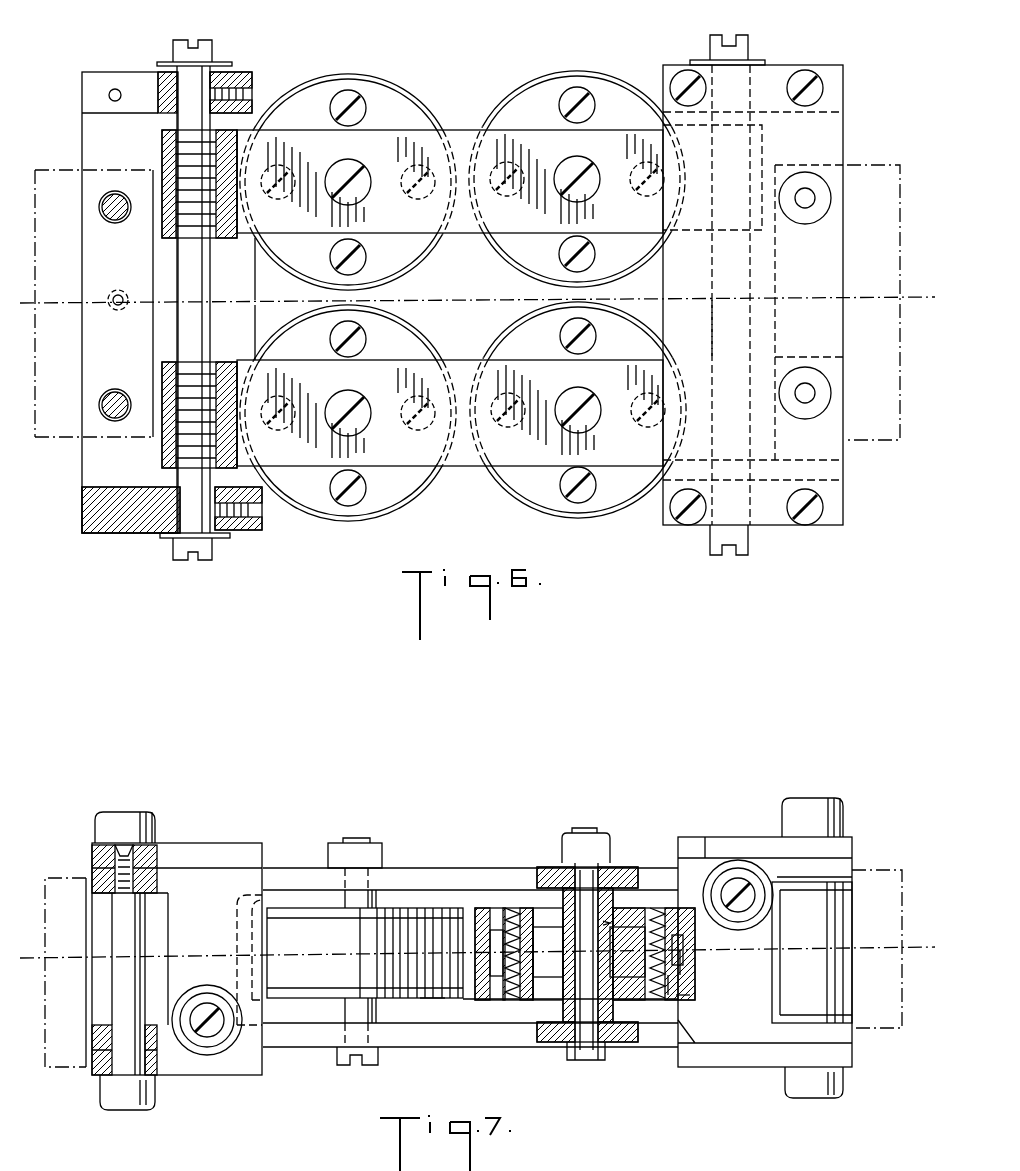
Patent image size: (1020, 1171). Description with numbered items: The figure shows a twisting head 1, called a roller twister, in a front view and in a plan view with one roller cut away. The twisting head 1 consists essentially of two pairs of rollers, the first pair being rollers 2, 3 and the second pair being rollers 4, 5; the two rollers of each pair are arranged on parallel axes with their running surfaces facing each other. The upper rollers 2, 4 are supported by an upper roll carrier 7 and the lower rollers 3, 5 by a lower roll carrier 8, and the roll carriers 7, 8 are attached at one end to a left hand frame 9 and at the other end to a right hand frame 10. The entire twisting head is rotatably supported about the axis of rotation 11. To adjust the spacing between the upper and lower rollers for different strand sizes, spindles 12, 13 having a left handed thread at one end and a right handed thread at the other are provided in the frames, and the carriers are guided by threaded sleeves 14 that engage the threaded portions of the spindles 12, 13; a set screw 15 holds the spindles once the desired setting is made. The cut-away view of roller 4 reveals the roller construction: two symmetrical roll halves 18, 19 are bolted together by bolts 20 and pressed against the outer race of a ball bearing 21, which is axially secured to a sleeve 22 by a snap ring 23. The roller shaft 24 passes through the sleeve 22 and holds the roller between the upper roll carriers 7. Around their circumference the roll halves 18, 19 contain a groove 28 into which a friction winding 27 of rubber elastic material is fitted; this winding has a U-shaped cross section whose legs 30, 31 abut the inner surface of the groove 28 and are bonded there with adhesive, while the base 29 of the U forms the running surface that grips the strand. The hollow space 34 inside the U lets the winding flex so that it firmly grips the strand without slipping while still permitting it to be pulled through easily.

In FIG. 6, the twisting head 1 is at (492, 78).
In FIG. 6, the roller 2 is at (375, 100).
In FIG. 7, the roller 2 is at (420, 905).
In FIG. 6, the roller 3 is at (378, 505).
In FIG. 6, the roller 4 is at (610, 98).
In FIG. 7, the roller 4 is at (537, 905).
In FIG. 6, the roller 5 is at (537, 495).
In FIG. 6, the upper roll carrier 7 is at (470, 130).
In FIG. 7, the upper roll carrier 7 is at (312, 1035).
In FIG. 6, the lower roll carrier 8 is at (463, 452).
In FIG. 6, the left hand frame 9 is at (90, 140).
In FIG. 7, the left hand frame 9 is at (175, 1077).
In FIG. 6, the right hand frame 10 is at (830, 127).
In FIG. 7, the right hand frame 10 is at (742, 1032).
In FIG. 6, the axis of rotation 11 is at (875, 300).
In FIG. 7, the axis of rotation 11 is at (880, 940).
In FIG. 6, the spindle 12 is at (180, 330).
In FIG. 7, the spindle 12 is at (213, 1032).
In FIG. 6, the spindle 13 is at (757, 323).
In FIG. 7, the spindle 13 is at (740, 880).
In FIG. 6, the threaded sleeve 14 is at (165, 160).
In FIG. 6, the set screw 15 is at (247, 72).
In FIG. 7, the roll half 18 is at (487, 1005).
In FIG. 7, the roll half 19 is at (493, 905).
In FIG. 7, the bolt 20 is at (510, 1005).
In FIG. 7, the bearing sleeve 21 is at (627, 960).
In FIG. 7, the sleeve 22 is at (565, 1015).
In FIG. 7, the snap ring 23 is at (608, 920).
In FIG. 7, the roller shaft 24 is at (580, 1035).
In FIG. 7, the friction winding 27 is at (690, 982).
In FIG. 7, the groove 28 is at (622, 940).
In FIG. 7, the base of the U 29 is at (690, 962).
In FIG. 7, the leg 30 is at (690, 1000).
In FIG. 7, the leg 31 is at (684, 915).
In FIG. 7, the hollow space 34 is at (432, 1000).